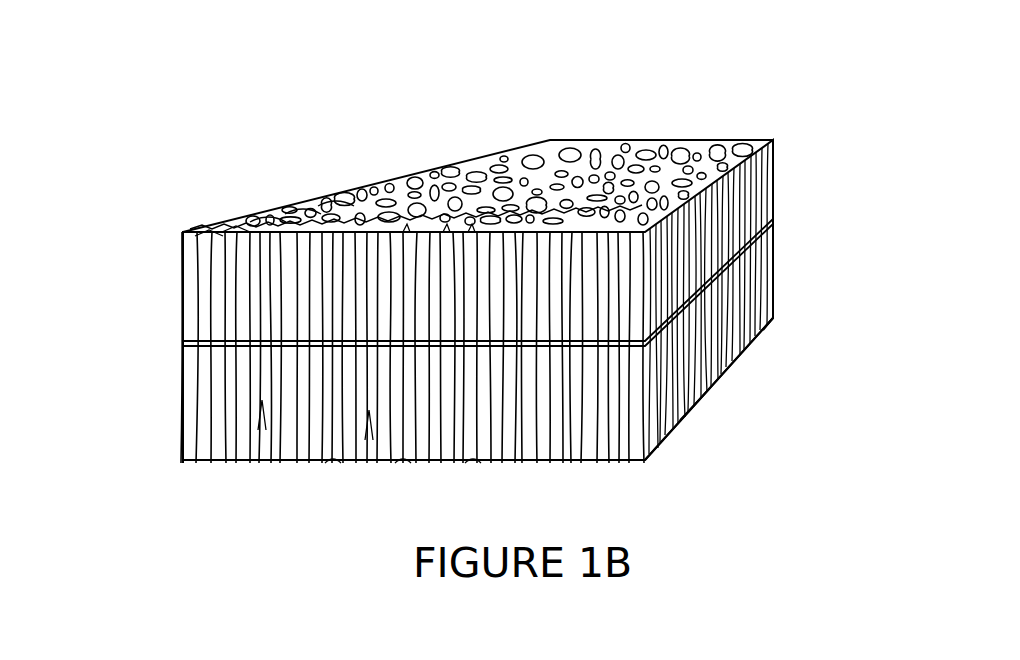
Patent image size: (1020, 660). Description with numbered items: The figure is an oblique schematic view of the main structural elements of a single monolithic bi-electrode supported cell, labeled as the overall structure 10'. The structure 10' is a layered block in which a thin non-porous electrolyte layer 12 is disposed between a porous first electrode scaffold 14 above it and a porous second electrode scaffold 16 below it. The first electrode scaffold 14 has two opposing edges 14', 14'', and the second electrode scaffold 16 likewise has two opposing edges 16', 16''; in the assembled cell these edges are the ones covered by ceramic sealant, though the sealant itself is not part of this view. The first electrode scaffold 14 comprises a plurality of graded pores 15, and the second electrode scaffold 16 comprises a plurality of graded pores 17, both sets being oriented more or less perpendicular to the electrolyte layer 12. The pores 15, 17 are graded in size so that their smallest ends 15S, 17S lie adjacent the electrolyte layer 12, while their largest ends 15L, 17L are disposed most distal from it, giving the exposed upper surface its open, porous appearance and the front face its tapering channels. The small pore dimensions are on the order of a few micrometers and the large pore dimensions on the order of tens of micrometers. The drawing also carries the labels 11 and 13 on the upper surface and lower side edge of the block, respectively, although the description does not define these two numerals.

The overall structure 10' is at (493, 241).
The porous top surface 11 is at (543, 147).
The non-porous electrolyte layer 12 is at (763, 233).
The bottom edge of side face 13 is at (685, 408).
The first electrode scaffold 14 is at (766, 275).
The opposing edge of first electrode scaffold 14' is at (816, 323).
The opposing edge of first electrode scaffold 14'' is at (844, 91).
The graded pores 15 is at (472, 262).
The largest ends of pores 15L is at (358, 186).
The smallest ends of pores 15S is at (300, 337).
The second electrode scaffold 16 is at (843, 230).
The opposing edge of second electrode scaffold 16' is at (764, 418).
The opposing edge of second electrode scaffold 16'' is at (116, 364).
The graded pores 17 is at (383, 433).
The largest ends of pores 17L is at (473, 460).
The smallest ends of pores 17S is at (410, 348).